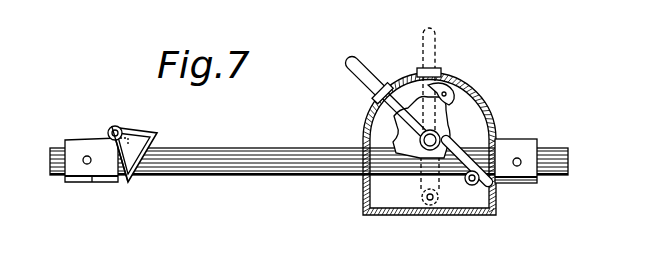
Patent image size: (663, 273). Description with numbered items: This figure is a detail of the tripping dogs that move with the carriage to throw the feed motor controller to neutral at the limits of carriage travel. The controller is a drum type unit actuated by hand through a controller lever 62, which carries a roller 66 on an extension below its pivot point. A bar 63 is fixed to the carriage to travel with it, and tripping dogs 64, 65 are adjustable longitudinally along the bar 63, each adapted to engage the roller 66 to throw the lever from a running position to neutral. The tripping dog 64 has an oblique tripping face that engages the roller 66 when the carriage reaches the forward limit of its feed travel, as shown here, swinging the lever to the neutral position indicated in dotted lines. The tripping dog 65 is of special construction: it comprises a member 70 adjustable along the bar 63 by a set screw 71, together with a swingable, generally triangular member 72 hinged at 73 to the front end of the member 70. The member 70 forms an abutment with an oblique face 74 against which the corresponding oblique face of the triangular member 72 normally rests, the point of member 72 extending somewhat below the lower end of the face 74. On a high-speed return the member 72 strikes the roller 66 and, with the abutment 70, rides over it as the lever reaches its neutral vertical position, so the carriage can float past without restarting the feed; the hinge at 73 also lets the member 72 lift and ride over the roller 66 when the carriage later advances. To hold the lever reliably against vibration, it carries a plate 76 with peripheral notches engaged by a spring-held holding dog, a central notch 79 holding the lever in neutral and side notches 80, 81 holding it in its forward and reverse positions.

The controller lever 62 is at (384, 80).
The bar 63 is at (268, 152).
The tripping dog 64 is at (503, 140).
The tripping dog 65 is at (88, 140).
The roller 66 is at (472, 186).
The member 70 is at (97, 180).
The set screw 71 is at (85, 163).
The swingable, generally triangular member 72 is at (147, 133).
The hinge 73 is at (119, 128).
The oblique face 74 is at (116, 178).
The plate 76 is at (400, 175).
The central notch 79 is at (440, 72).
The side notch 80 is at (392, 137).
The side notch 81 is at (452, 98).